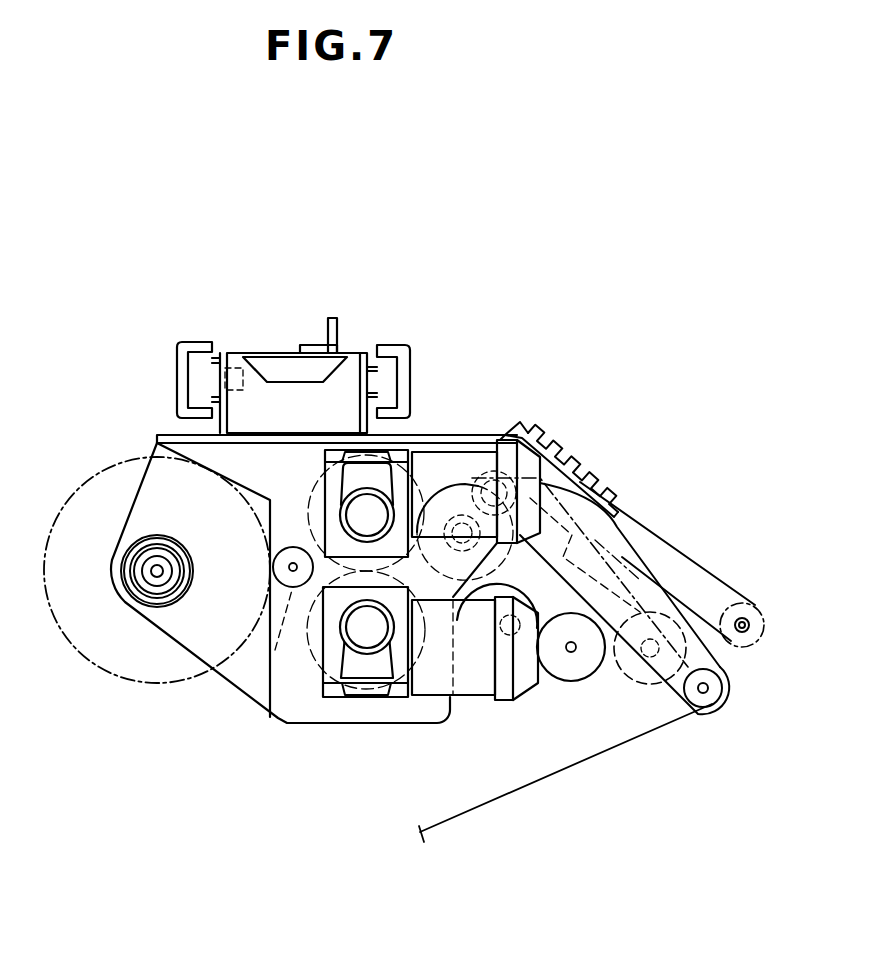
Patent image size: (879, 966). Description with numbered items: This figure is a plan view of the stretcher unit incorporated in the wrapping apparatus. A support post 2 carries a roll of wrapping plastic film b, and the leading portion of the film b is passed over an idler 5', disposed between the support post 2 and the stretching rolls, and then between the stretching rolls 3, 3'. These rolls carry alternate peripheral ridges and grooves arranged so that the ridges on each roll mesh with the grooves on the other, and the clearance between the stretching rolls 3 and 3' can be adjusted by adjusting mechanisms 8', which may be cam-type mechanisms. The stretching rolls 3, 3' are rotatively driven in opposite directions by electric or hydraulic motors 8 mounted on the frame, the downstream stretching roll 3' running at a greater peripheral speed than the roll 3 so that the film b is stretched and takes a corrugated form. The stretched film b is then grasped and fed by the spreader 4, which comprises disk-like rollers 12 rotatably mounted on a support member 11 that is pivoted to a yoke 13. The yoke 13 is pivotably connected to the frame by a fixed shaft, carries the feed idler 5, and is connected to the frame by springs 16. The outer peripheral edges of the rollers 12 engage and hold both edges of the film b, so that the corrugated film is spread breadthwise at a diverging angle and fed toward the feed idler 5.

The support post 2 is at (156, 578).
The stretching roll 3 is at (367, 676).
The stretching roll 3' is at (349, 510).
The spreader 4 is at (603, 683).
The feed idler 5 is at (627, 655).
The idler 5' is at (267, 646).
The motor 8 is at (454, 573).
The adjusting mechanism 8' is at (326, 530).
The support member 11 is at (558, 675).
The disk-like roller 12 is at (585, 672).
The yoke 13 is at (623, 557).
The spring 16 is at (582, 466).
The wrapping plastic film b is at (84, 480).